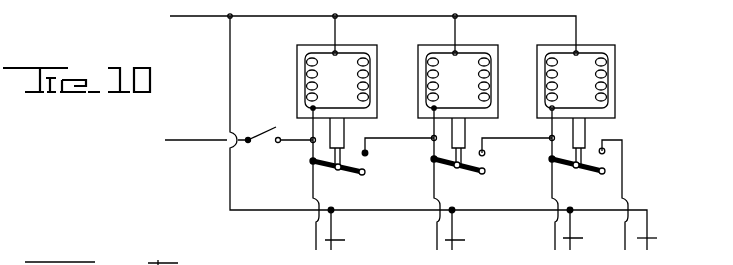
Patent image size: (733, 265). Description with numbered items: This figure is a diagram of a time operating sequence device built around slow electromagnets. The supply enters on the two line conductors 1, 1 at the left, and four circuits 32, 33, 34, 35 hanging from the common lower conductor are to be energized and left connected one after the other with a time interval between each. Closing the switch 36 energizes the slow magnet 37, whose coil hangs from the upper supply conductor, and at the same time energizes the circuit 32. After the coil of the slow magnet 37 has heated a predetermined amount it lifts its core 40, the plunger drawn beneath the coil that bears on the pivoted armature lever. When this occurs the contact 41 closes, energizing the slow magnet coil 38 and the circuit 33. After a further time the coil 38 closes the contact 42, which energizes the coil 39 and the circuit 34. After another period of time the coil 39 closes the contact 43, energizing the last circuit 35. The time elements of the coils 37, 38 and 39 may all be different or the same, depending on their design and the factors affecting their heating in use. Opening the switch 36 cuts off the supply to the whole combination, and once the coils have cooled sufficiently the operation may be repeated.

The line conductor 1 is at (197, 19).
The circuit 32 is at (348, 236).
The circuit 33 is at (468, 236).
The circuit 34 is at (583, 236).
The circuit 35 is at (661, 249).
The switch 36 is at (270, 132).
The slow magnet 37 is at (335, 75).
The slow magnet coil 38 is at (462, 72).
The coil 39 is at (590, 78).
The core 40 is at (337, 139).
The contact 41 is at (372, 151).
The contact 42 is at (483, 160).
The contact 43 is at (607, 162).